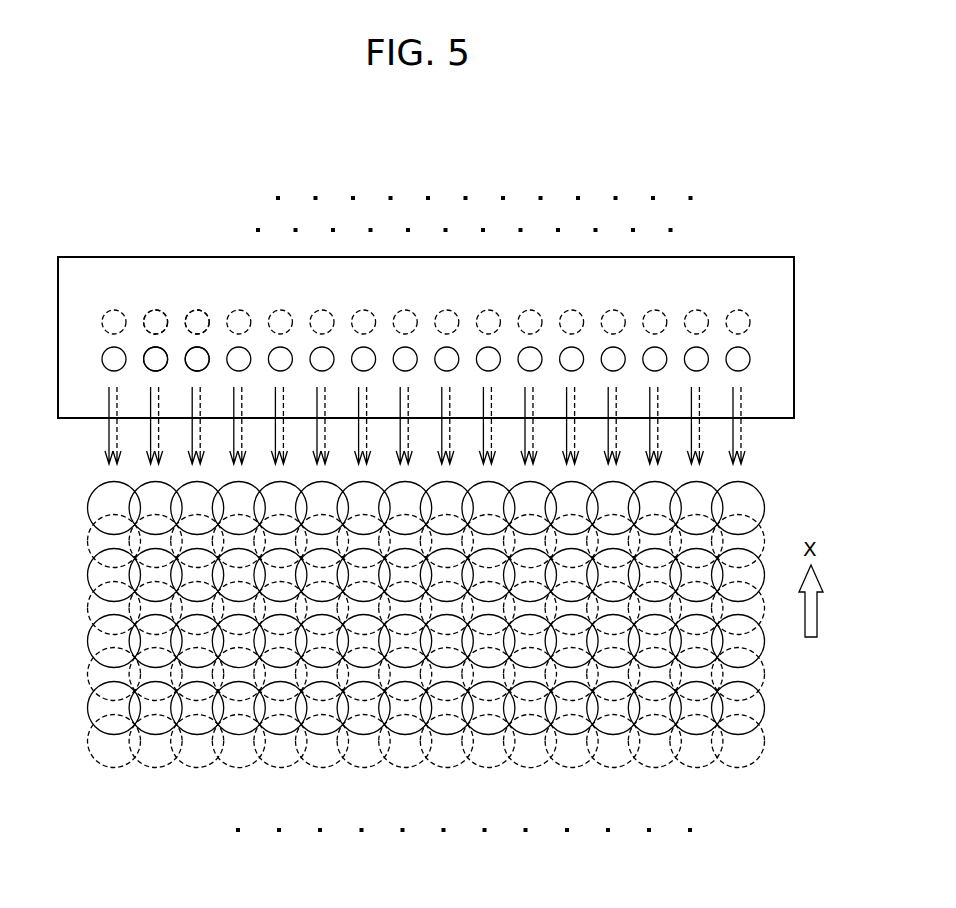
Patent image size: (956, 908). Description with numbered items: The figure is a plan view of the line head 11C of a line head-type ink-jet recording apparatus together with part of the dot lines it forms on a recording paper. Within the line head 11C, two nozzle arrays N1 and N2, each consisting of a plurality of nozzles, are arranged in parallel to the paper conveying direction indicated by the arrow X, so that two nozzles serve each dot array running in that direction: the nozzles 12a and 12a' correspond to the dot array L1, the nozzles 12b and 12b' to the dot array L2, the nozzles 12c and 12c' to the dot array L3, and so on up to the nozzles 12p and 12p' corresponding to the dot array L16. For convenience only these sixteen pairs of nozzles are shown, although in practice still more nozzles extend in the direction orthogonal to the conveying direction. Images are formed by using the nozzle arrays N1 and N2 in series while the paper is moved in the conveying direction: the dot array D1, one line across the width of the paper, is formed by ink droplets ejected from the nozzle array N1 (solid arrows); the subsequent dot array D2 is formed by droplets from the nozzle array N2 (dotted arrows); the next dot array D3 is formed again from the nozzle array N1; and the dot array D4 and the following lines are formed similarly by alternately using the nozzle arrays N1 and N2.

The line head 11C is at (778, 378).
The nozzle 12a is at (90, 295).
The nozzle 12b is at (148, 295).
The nozzle 12c is at (204, 295).
The nozzle 12p is at (719, 296).
The nozzle 12a' is at (115, 259).
The nozzle 12b' is at (176, 259).
The nozzle 12c' is at (223, 259).
The nozzle 12p' is at (742, 259).
The nozzle array N1 is at (70, 364).
The nozzle array N2 is at (70, 327).
The dot array D1 is at (70, 513).
The dot array D2 is at (70, 546).
The dot array D3 is at (70, 580).
The dot array D4 is at (70, 613).
The dot array L1 is at (118, 792).
The dot array L2 is at (160, 792).
The dot array L3 is at (201, 792).
The dot array L16 is at (742, 792).